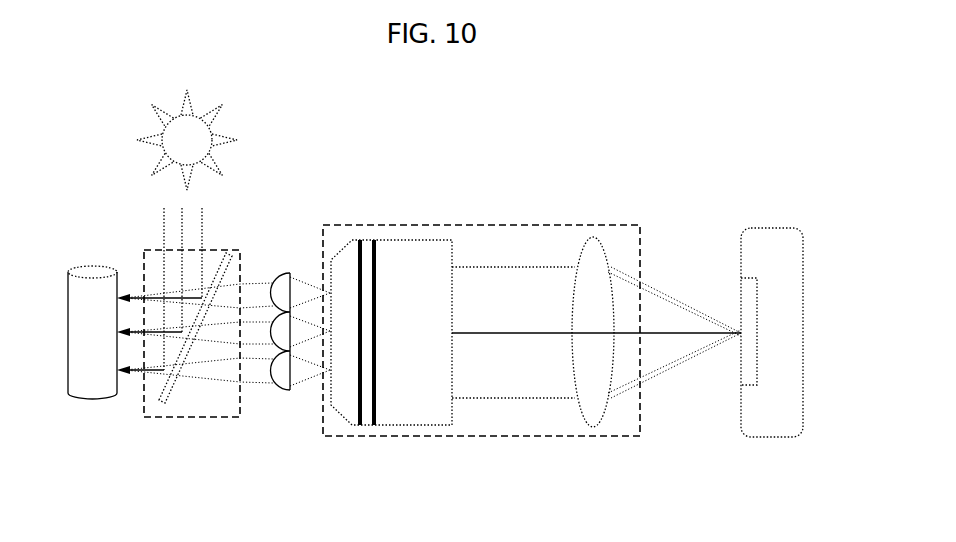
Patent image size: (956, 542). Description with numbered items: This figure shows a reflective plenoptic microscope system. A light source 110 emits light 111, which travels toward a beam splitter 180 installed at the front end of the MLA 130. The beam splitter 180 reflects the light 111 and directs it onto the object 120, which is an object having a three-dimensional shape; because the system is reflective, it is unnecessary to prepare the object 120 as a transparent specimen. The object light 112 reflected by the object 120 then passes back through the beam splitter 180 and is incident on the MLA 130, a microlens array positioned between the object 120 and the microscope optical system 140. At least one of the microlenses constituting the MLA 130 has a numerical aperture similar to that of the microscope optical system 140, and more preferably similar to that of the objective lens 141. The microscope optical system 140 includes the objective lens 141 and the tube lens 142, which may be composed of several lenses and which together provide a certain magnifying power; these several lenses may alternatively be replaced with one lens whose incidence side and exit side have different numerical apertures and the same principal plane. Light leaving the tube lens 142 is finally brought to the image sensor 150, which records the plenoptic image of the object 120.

The light source 110 is at (216, 124).
The light 111 is at (160, 228).
The object light 112 is at (266, 282).
The object 120 is at (90, 398).
The MLA 130 is at (287, 397).
The microscope optical system 140 is at (445, 222).
The objective lens 141 is at (402, 426).
The tube lens 142 is at (593, 428).
The image sensor 150 is at (770, 438).
The beam splitter 180 is at (190, 418).